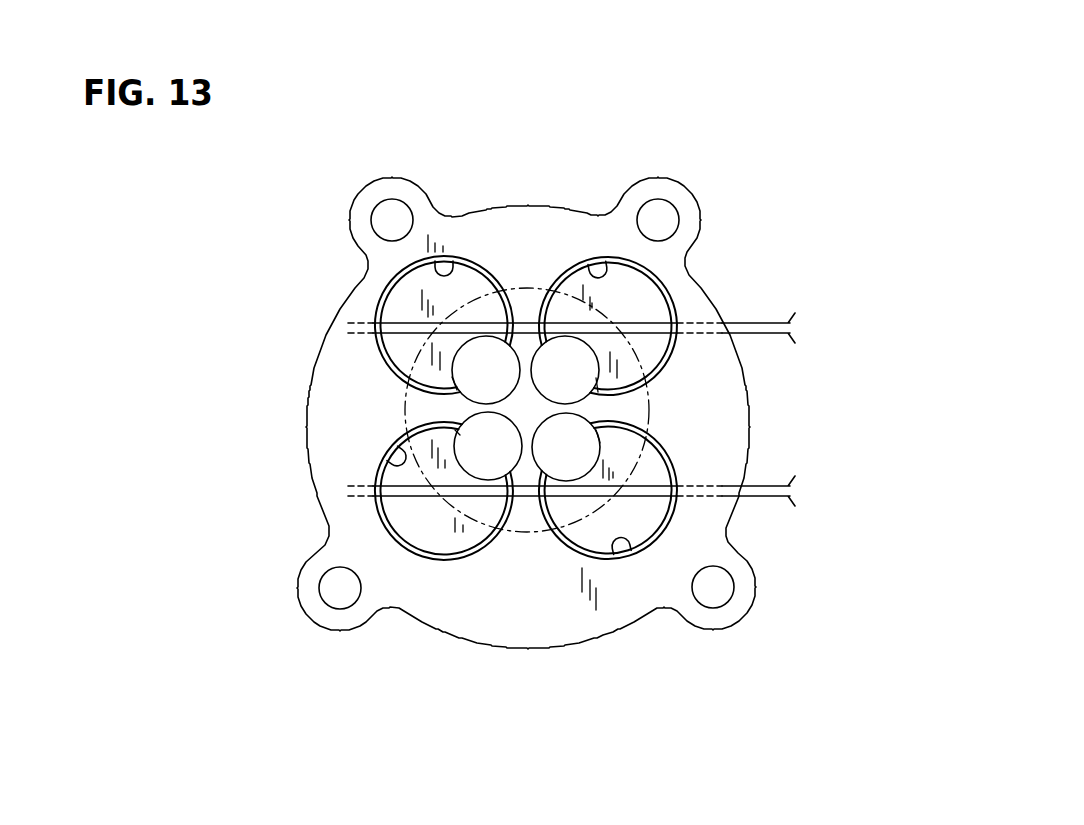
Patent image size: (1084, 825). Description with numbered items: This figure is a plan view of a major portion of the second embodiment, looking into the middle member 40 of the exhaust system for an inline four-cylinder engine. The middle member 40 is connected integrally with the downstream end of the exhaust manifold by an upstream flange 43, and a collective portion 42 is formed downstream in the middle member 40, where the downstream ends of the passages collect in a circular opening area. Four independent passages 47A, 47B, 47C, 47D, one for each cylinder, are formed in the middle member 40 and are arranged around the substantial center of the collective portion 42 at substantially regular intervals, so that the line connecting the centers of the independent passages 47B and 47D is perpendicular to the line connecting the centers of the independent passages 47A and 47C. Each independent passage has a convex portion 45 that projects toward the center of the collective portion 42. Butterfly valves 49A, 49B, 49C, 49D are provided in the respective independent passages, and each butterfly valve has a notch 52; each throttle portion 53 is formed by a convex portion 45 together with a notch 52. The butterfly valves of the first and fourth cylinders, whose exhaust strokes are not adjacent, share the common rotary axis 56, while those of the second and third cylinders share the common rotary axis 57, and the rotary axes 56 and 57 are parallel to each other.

The middle member 40 is at (270, 631).
The collective portion 42 is at (519, 556).
The upstream flange 43 is at (492, 623).
The convex portion 45 is at (556, 422).
The throttle portion 53 is at (500, 388).
The independent passage 47A is at (444, 262).
The independent passage 47B is at (393, 455).
The independent passage 47C is at (628, 556).
The independent passage 47D is at (610, 270).
The butterfly valve 49A is at (405, 303).
The butterfly valve 49B is at (408, 520).
The butterfly valve 49C is at (647, 516).
The butterfly valve 49D is at (627, 288).
The notch 52 is at (478, 352).
The common rotary axis 56 is at (643, 320).
The common rotary axis 57 is at (640, 485).